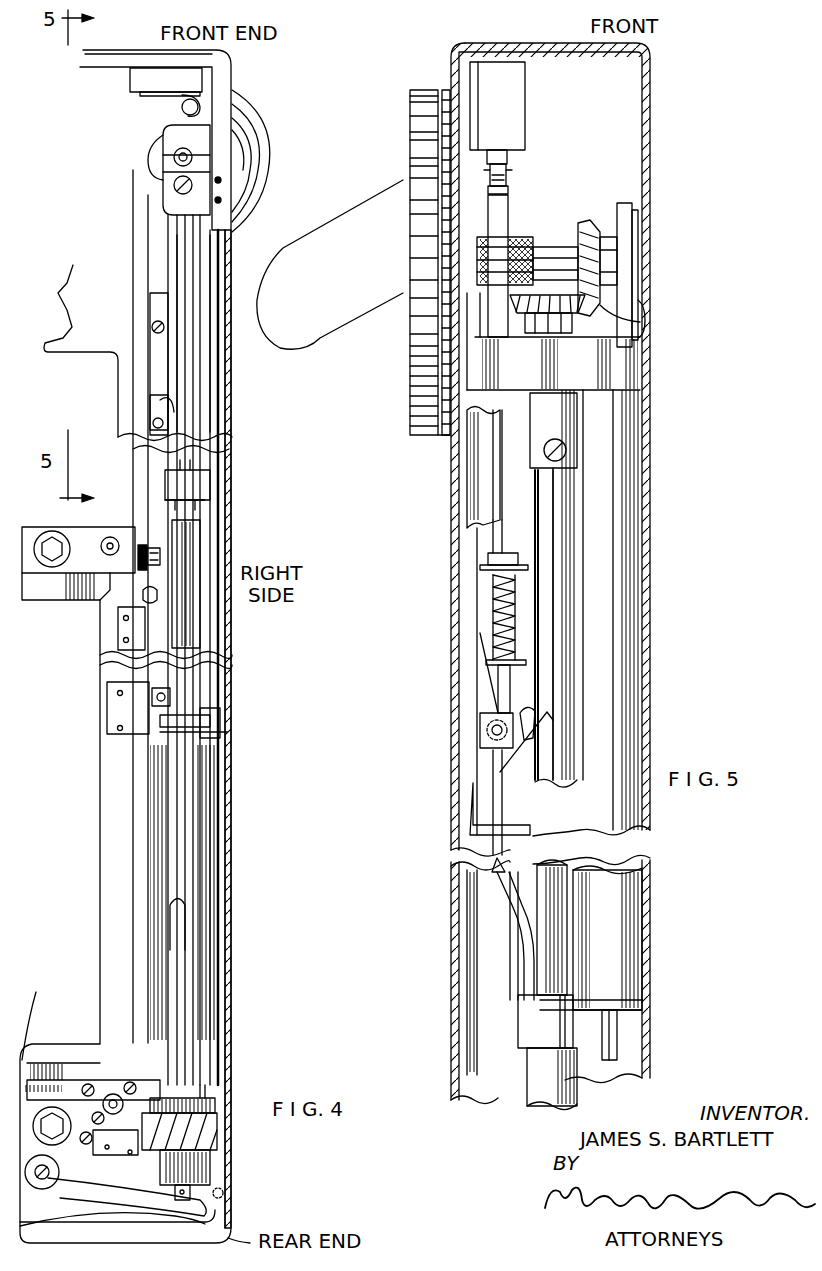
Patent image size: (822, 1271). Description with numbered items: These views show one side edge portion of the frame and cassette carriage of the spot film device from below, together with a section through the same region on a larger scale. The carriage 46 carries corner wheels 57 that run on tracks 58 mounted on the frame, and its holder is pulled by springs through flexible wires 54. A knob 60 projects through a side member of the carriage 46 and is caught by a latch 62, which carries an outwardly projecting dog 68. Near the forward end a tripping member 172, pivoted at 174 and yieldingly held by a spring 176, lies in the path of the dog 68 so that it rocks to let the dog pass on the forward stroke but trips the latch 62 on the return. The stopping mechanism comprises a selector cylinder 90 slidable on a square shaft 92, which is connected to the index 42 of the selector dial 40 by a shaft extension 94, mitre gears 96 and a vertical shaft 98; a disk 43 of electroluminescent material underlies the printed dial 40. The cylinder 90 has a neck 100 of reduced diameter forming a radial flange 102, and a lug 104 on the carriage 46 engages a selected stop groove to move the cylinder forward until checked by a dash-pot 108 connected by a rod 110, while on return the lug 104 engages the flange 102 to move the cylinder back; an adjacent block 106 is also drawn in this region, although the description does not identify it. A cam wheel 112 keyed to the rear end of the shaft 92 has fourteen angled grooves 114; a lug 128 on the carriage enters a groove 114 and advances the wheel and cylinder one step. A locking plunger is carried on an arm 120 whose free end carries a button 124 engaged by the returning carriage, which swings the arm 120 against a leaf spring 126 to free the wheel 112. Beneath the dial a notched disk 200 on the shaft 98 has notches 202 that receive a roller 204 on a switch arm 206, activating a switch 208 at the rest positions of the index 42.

In FIG. 5, the selector dial 40 is at (420, 338).
In FIG. 4, the index 42 is at (246, 142).
In FIG. 5, the index 42 is at (352, 224).
In FIG. 5, the electroluminescent disk 43 is at (444, 436).
In FIG. 4, the carriage 46 is at (55, 595).
In FIG. 4, the flexible wire 54 is at (33, 528).
In FIG. 4, the wheel 57 is at (106, 530).
In FIG. 4, the track 58 is at (144, 326).
In FIG. 4, the knob 60 is at (145, 619).
In FIG. 4, the latch 62 is at (138, 577).
In FIG. 4, the dog 68 is at (172, 562).
In FIG. 4, the selector cylinder 90 is at (190, 852).
In FIG. 4, the square shaft 92 is at (182, 612).
In FIG. 5, the square shaft 92 is at (565, 1090).
In FIG. 4, the shaft extension 94 is at (187, 373).
In FIG. 5, the shaft extension 94 is at (552, 598).
In FIG. 5, the mitre gears 96 is at (648, 322).
In FIG. 5, the vertical shaft 98 is at (556, 246).
In FIG. 4, the neck 100 is at (205, 1092).
In FIG. 4, the radial flange 102 is at (215, 1100).
In FIG. 4, the lug 104 is at (150, 1088).
In FIG. 4, the block 106 is at (187, 483).
In FIG. 5, the block 106 is at (545, 1020).
In FIG. 4, the dash-pot 108 is at (214, 423).
In FIG. 5, the dash-pot 108 is at (620, 914).
In FIG. 4, the rod 110 is at (213, 688).
In FIG. 5, the rod 110 is at (607, 1044).
In FIG. 4, the cam wheel 112 is at (225, 1128).
In FIG. 4, the groove 114 is at (185, 1143).
In FIG. 4, the arm 120 is at (76, 1181).
In FIG. 4, the button 124 is at (31, 1012).
In FIG. 4, the leaf spring 126 is at (85, 1215).
In FIG. 4, the lug 128 is at (90, 1138).
In FIG. 4, the tripping member 172 is at (155, 415).
In FIG. 5, the tripping member 172 is at (540, 740).
In FIG. 5, the pivot 174 is at (488, 733).
In FIG. 5, the spring 176 is at (491, 682).
In FIG. 4, the notched disk 200 is at (150, 155).
In FIG. 5, the notched disk 200 is at (497, 246).
In FIG. 4, the notch 202 is at (170, 130).
In FIG. 4, the roller 204 is at (182, 107).
In FIG. 5, the roller 204 is at (506, 182).
In FIG. 4, the switch arm 206 is at (160, 92).
In FIG. 4, the switch 208 is at (137, 82).
In FIG. 5, the switch 208 is at (528, 118).